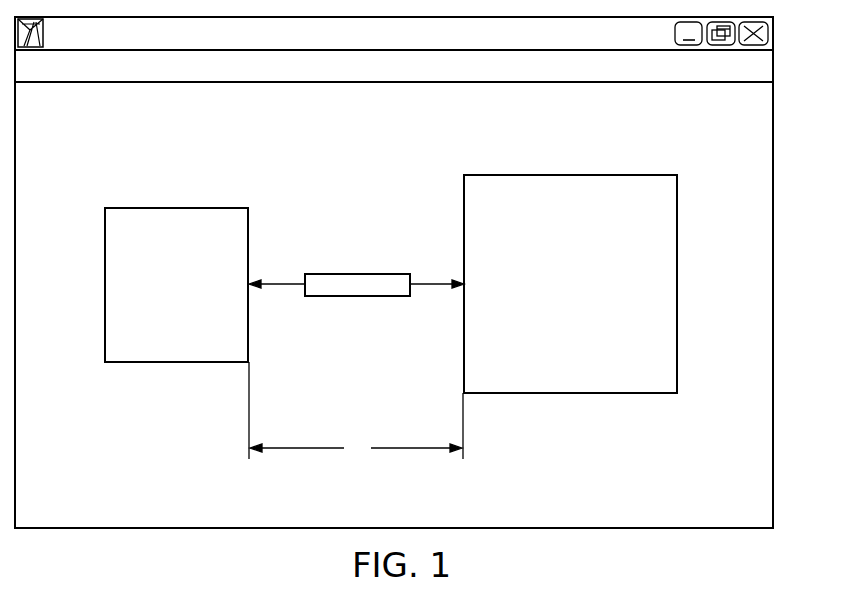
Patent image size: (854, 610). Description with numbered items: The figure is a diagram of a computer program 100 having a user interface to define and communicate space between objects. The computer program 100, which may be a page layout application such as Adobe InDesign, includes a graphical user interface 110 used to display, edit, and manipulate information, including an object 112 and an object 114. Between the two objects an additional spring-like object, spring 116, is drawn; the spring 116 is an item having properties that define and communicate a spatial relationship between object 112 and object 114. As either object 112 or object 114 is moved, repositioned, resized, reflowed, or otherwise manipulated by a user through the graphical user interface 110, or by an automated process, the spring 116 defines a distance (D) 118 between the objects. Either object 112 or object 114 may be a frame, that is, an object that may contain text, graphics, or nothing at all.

The computer program 100 is at (773, 62).
The graphical user interface 110 is at (728, 124).
The object 112 is at (212, 208).
The object 114 is at (623, 175).
The spring 116 is at (383, 274).
The distance (D) 118 is at (464, 437).